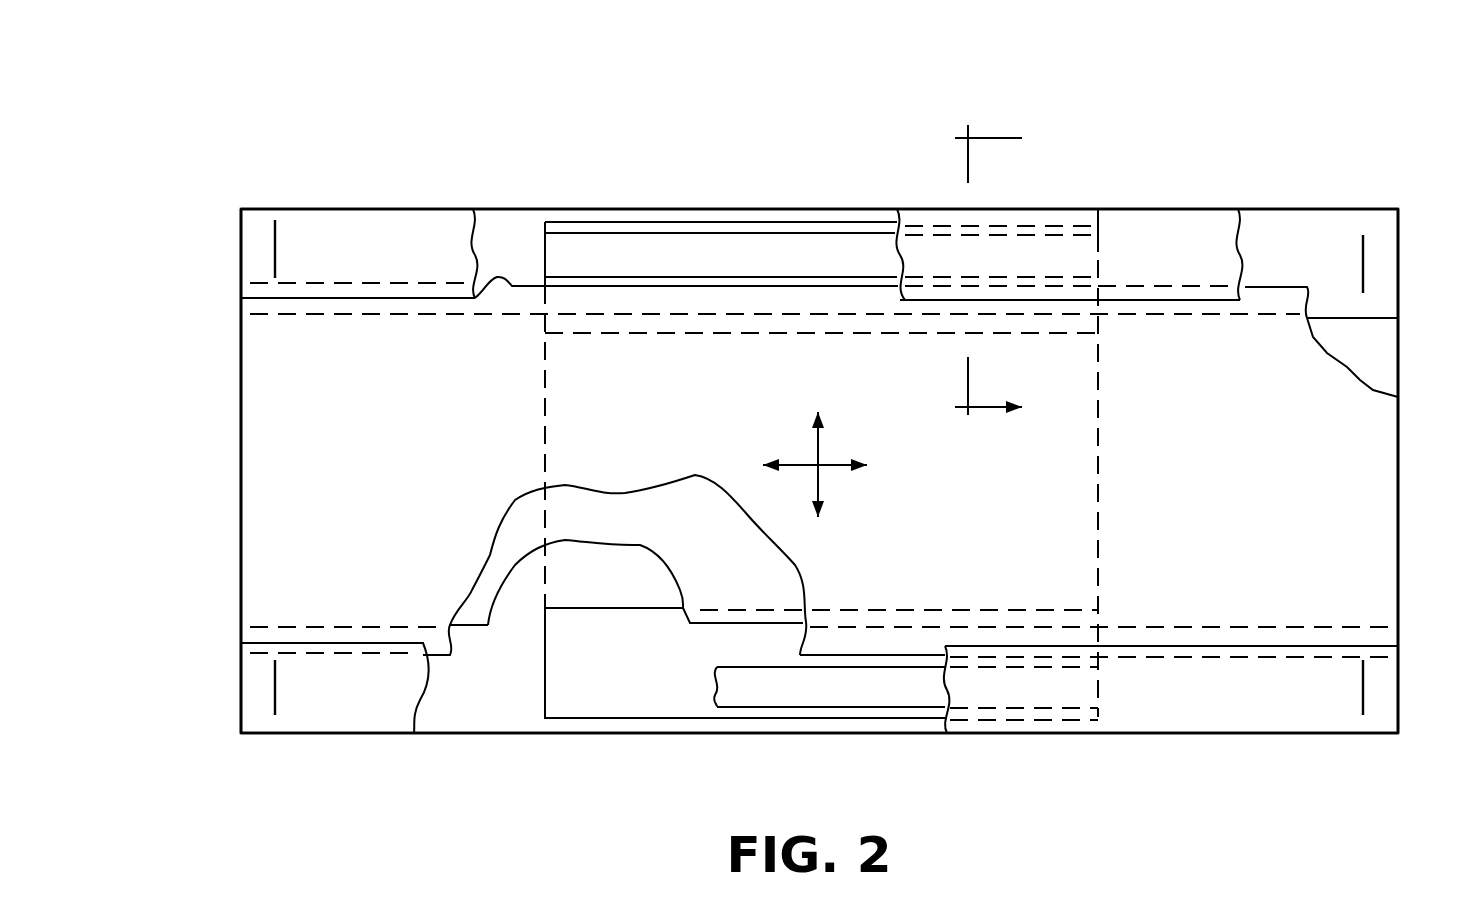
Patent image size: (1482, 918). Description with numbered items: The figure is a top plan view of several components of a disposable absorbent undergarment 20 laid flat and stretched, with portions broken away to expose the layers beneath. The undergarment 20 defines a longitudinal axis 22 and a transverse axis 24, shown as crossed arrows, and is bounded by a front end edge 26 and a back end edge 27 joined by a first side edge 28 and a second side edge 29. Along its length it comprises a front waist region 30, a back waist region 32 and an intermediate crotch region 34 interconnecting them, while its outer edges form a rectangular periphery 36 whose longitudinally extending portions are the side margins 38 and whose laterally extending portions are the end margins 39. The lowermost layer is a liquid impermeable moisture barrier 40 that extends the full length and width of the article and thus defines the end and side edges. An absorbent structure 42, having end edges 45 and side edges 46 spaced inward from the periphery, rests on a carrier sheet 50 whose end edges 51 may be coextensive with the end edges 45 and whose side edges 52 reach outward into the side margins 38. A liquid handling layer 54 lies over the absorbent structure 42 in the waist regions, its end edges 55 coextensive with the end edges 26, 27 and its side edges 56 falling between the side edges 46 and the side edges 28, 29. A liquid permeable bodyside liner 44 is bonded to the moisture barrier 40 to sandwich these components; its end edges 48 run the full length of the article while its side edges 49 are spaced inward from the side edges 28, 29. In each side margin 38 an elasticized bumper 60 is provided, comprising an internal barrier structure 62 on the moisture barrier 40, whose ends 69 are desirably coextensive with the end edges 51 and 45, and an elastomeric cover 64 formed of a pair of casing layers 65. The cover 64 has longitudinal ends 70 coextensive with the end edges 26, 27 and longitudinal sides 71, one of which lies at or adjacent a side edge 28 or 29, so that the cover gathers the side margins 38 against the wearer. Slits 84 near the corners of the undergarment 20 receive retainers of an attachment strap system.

The undergarment 20 is at (241, 265).
The longitudinal axis 22 is at (800, 462).
The transverse axis 24 is at (820, 483).
The front longitudinal end edge 26 is at (1398, 562).
The back longitudinal end edge 27 is at (241, 587).
The first longitudinal side edge 28 is at (335, 207).
The second longitudinal side edge 29 is at (1230, 735).
The front waist region 30 is at (1293, 740).
The back waist region 32 is at (241, 375).
The crotch region 34 is at (683, 207).
The periphery 36 is at (262, 447).
The side margins 38 is at (400, 218).
The end margins 39 is at (262, 510).
The moisture barrier 40 is at (453, 707).
The absorbent structure 42 is at (590, 594).
The bodyside liner 44 is at (390, 484).
The end edges of absorbent structure 45 is at (1098, 448).
The side edges of absorbent structure 46 is at (660, 333).
The end edges of bodyside liner 48 is at (1398, 415).
The side edges of bodyside liner 49 is at (500, 285).
The carrier sheet 50 is at (826, 222).
The end edges of carrier sheet 51 is at (1098, 240).
The side edges of carrier sheet 52 is at (877, 225).
The liquid handling layer 54 is at (1353, 356).
The end edges of liquid handling layer 55 is at (241, 538).
The side edges of liquid handling layer 56 is at (1380, 318).
The elasticized bumper 60 is at (1000, 722).
The internal barrier structure 62 is at (737, 269).
The cover 64 is at (300, 210).
The casing layers 65 is at (1238, 706).
The ends of internal barrier structures 69 is at (545, 240).
The longitudinal ends of cover 70 is at (241, 228).
The longitudinal sides of cover 71 is at (398, 300).
The slits 84 is at (1375, 262).